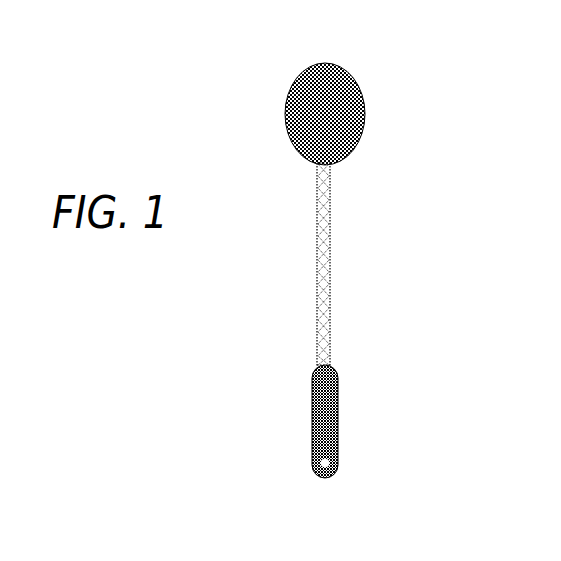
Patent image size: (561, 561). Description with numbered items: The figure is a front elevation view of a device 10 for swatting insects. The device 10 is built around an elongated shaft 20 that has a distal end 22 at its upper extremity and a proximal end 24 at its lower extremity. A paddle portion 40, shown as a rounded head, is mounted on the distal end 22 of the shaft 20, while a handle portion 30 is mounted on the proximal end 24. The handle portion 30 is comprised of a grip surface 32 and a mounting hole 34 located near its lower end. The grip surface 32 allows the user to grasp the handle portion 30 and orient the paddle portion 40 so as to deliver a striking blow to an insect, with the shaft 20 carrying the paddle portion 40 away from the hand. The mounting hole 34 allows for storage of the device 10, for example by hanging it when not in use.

The device 10 is at (452, 200).
The shaft 20 is at (330, 233).
The distal end 22 is at (314, 164).
The proximal end 24 is at (318, 358).
The handle portion 30 is at (337, 428).
The grip surface 32 is at (317, 412).
The mounting hole 34 is at (310, 463).
The paddle portion 40 is at (294, 81).